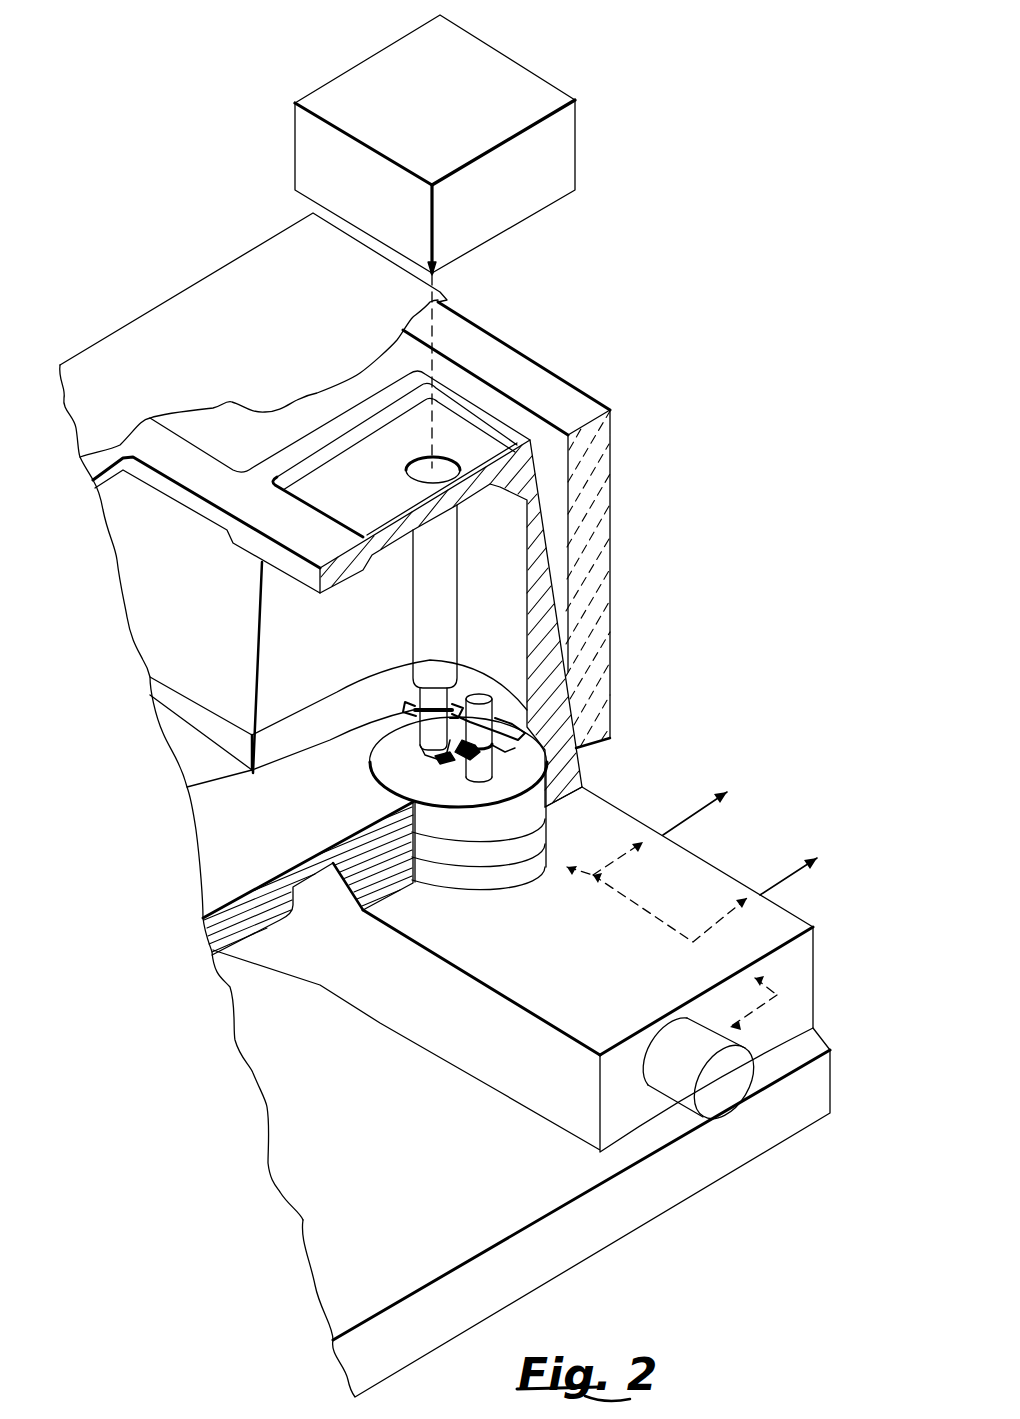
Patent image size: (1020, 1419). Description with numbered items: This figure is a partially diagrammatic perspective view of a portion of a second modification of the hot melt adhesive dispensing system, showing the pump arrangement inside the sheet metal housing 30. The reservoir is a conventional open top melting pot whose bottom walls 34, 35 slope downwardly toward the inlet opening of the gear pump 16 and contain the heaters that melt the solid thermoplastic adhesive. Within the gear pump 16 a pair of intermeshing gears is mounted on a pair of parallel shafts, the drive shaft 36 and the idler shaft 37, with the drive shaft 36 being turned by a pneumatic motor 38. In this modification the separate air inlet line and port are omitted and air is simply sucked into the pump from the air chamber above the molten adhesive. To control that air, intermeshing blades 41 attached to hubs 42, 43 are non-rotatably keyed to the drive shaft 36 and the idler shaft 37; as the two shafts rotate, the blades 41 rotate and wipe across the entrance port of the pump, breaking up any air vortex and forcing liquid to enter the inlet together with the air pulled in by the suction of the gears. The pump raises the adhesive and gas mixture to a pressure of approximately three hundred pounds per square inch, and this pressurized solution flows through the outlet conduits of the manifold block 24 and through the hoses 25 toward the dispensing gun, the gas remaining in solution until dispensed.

The gear pump 16 is at (197, 717).
The manifold block 24 is at (805, 962).
The hoses 25 is at (710, 810).
The sheet metal housing 30 is at (160, 330).
The bottom wall 34 is at (197, 757).
The bottom wall 35 is at (210, 827).
The drive shaft 36 is at (423, 626).
The idler shaft 37 is at (483, 697).
The pneumatic motor 38 is at (565, 163).
The intermeshing blades 41 is at (412, 706).
The hub 42 is at (430, 722).
The hub 43 is at (498, 746).